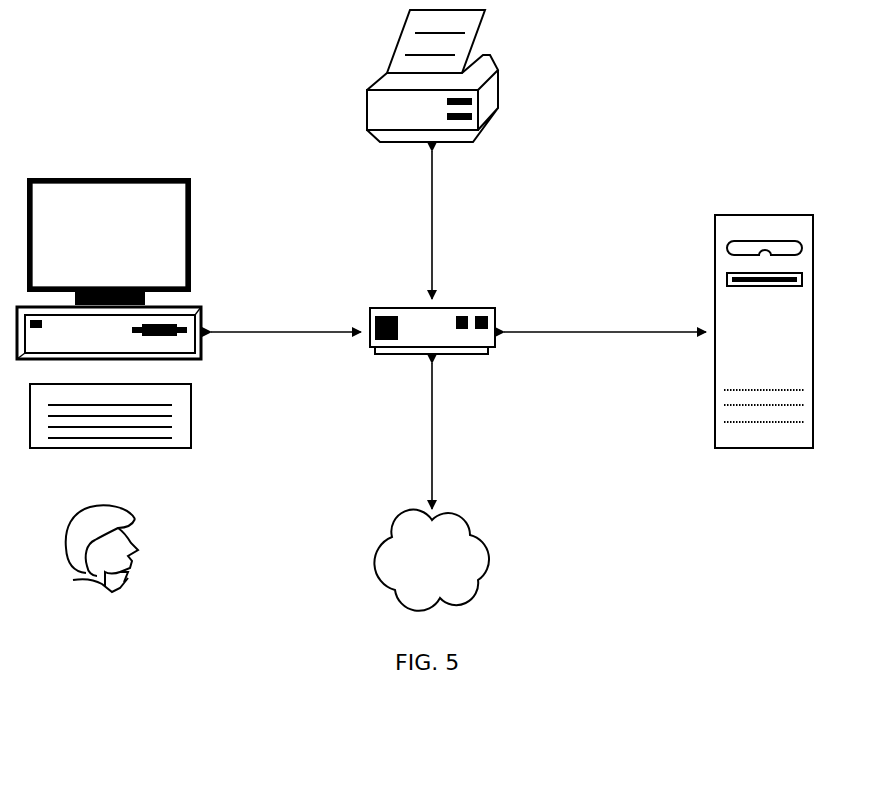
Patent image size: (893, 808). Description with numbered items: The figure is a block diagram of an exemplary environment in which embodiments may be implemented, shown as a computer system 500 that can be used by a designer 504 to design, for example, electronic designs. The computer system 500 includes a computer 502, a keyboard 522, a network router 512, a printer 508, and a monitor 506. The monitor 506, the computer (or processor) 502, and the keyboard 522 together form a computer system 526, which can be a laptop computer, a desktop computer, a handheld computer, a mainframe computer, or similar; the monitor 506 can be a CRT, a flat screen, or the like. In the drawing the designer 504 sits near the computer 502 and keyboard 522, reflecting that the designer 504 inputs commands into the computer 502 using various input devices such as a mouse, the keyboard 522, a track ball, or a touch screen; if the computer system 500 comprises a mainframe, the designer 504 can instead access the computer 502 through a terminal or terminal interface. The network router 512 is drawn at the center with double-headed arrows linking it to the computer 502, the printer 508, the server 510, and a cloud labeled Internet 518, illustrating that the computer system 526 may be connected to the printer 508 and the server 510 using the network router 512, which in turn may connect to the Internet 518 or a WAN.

The computer system 500 is at (697, 82).
The computer 502 is at (205, 308).
The designer 504 is at (133, 508).
The monitor 506 is at (190, 178).
The printer 508 is at (365, 117).
The server 510 is at (712, 430).
The network router 512 is at (459, 308).
The Internet 518 is at (465, 513).
The keyboard 522 is at (191, 416).
The computer system 526 is at (200, 228).